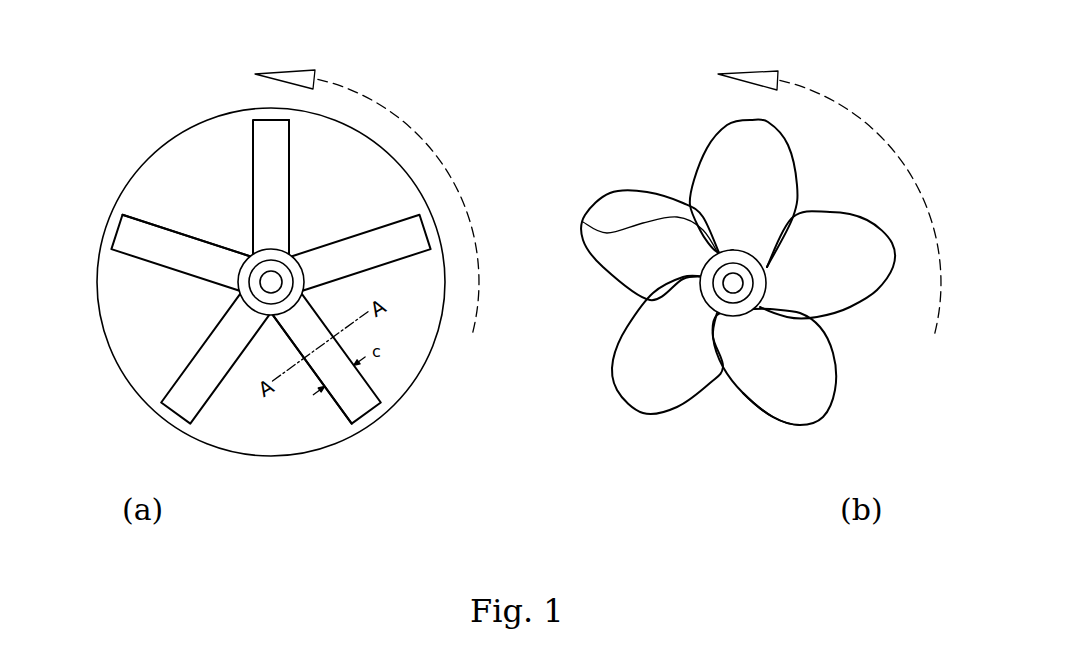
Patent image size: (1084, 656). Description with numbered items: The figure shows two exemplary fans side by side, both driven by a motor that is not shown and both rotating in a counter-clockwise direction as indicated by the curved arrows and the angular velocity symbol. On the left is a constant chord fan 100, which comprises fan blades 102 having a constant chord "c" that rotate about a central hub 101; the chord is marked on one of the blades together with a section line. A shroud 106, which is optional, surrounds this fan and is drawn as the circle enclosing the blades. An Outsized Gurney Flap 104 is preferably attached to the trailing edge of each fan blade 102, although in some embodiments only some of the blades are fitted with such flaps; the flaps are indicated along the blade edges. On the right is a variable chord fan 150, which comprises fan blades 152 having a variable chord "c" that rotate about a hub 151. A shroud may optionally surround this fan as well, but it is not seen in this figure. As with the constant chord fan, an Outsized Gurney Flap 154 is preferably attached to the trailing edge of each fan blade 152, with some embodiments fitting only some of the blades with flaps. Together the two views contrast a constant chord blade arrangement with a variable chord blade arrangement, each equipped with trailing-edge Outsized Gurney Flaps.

The fan 100 is at (370, 70).
The hub 101 is at (257, 307).
The fan blade 102 is at (114, 232).
The Outsized Gurney Flap 104 is at (181, 231).
The shroud 106 is at (432, 350).
The fan 150 is at (832, 72).
The hub 151 is at (583, 222).
The fan blade 152 is at (822, 397).
The Outsized Gurney Flap 154 is at (763, 420).